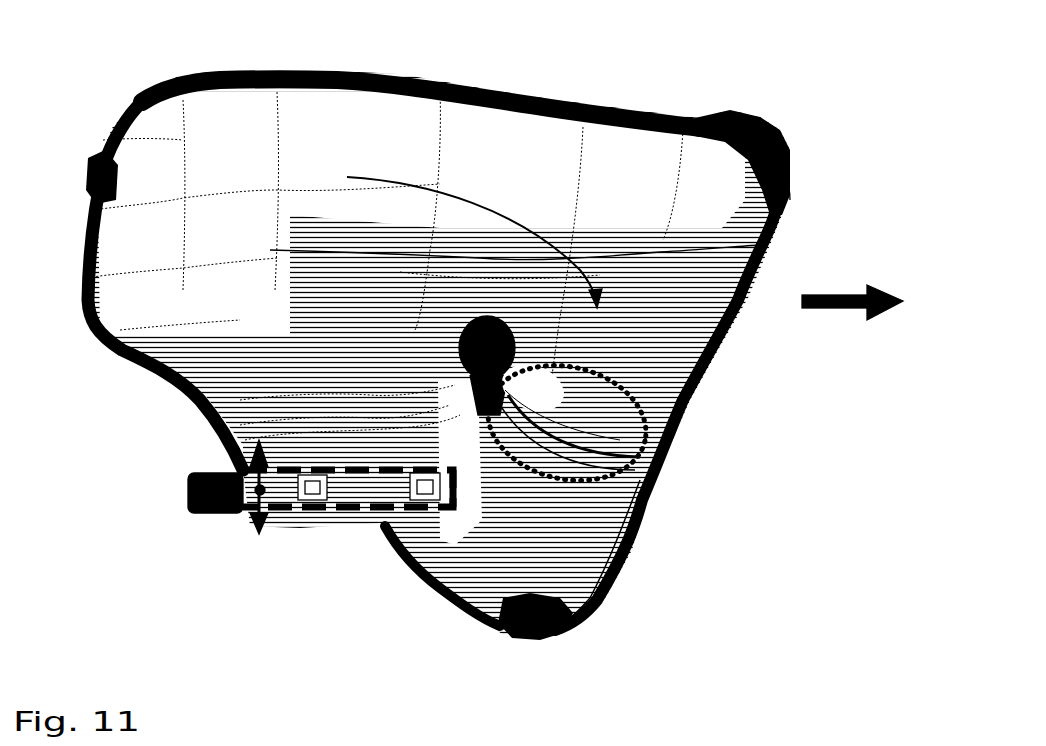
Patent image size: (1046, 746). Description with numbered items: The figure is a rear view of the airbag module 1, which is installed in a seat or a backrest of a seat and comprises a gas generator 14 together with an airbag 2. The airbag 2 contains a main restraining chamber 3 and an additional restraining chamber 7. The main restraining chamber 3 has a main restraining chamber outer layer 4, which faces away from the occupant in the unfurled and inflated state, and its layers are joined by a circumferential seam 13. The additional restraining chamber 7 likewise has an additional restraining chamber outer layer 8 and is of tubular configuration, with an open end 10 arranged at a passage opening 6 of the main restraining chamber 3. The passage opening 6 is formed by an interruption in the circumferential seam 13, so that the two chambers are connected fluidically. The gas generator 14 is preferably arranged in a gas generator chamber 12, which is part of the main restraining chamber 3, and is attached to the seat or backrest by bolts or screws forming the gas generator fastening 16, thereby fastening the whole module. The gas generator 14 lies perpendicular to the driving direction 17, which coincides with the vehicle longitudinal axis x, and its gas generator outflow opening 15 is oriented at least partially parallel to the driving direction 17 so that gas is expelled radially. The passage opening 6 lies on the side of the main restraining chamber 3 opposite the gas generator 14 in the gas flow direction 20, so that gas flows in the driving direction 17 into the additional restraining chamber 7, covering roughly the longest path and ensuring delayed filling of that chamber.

The airbag module 1 is at (118, 64).
The airbag 2 is at (800, 70).
The main restraining chamber 3 is at (335, 122).
The main restraining chamber outer layer 4 is at (497, 142).
The passage opening 6 is at (668, 443).
The additional restraining chamber 7 is at (590, 598).
The additional restraining chamber outer layer 8 is at (433, 580).
The open end 10 is at (637, 522).
The gas generator chamber 12 is at (247, 437).
The circumferential seam 13 is at (790, 178).
The gas generator 14 is at (188, 513).
The gas generator outflow opening 15 is at (252, 525).
The gas generator fastening 16 is at (383, 533).
The driving direction 17 is at (833, 310).
The gas flow direction 20 is at (760, 248).